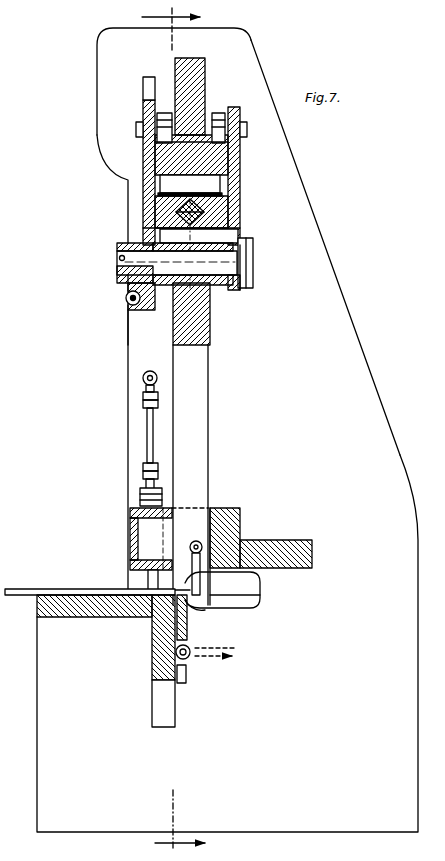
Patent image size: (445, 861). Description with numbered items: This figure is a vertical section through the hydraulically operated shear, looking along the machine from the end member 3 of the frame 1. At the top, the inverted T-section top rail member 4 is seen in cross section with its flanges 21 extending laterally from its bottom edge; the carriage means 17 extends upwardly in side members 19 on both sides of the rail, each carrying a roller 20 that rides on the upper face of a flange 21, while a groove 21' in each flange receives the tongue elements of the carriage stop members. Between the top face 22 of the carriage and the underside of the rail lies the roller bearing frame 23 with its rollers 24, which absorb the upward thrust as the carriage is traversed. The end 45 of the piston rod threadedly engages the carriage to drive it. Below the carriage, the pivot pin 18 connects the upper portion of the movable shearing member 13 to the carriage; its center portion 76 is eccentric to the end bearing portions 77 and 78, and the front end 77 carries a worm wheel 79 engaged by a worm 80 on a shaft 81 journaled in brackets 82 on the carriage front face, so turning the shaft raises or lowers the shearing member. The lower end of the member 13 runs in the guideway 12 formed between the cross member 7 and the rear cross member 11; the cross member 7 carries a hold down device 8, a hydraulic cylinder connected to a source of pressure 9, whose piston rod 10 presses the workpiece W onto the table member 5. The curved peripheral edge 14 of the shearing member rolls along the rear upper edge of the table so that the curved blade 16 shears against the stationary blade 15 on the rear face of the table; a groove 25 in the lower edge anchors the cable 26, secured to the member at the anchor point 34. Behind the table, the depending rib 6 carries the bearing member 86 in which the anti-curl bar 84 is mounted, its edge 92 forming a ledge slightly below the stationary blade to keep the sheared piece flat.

The frame 1 is at (364, 357).
The end member 3 is at (344, 317).
The top rail member 4 is at (205, 58).
The table member 5 is at (42, 605).
The rib 6 is at (152, 685).
The cross member 7 is at (130, 522).
The hold down device 8 is at (140, 496).
The source of pressure 9 is at (86, 380).
The piston rod 10 is at (150, 575).
The rear cross member 11 is at (238, 506).
The guideway 12 is at (200, 504).
The movable shearing member 13 is at (210, 407).
The curved peripheral edge 14 is at (222, 590).
The stationary blade 15 is at (152, 648).
The curved blade 16 is at (150, 590).
The carriage means 17 is at (245, 290).
The pivot pin 18 is at (117, 258).
The carriage side member 19 is at (136, 127).
The roller 20 is at (163, 113).
The flange 21 is at (190, 135).
The groove 21' is at (181, 180).
The top face of carriage 22 is at (205, 206).
The roller bearing frame 23 is at (145, 200).
The roller 24 is at (160, 212).
The groove 25 is at (260, 588).
The cable 26 is at (250, 556).
The cable anchor point 34 is at (240, 530).
The piston rod end 45 is at (222, 218).
The eccentric center portion 76 is at (236, 285).
The front end bearing portion 77 is at (118, 270).
The rear end bearing portion 78 is at (253, 263).
The worm wheel 79 is at (130, 290).
The worm 80 is at (130, 306).
The shaft 81 is at (126, 302).
The bracket 82 is at (140, 320).
The bar 84 is at (187, 632).
The bearing member 86 is at (188, 675).
The edge of bar 92 is at (200, 608).
The workpiece W is at (30, 590).